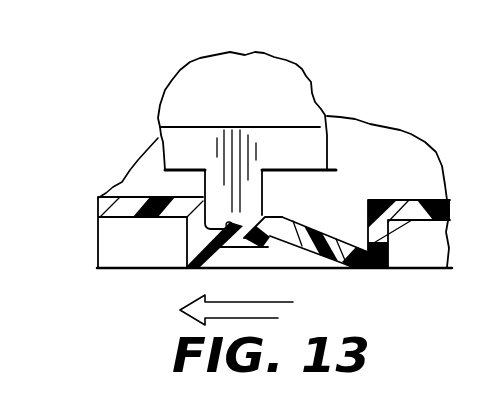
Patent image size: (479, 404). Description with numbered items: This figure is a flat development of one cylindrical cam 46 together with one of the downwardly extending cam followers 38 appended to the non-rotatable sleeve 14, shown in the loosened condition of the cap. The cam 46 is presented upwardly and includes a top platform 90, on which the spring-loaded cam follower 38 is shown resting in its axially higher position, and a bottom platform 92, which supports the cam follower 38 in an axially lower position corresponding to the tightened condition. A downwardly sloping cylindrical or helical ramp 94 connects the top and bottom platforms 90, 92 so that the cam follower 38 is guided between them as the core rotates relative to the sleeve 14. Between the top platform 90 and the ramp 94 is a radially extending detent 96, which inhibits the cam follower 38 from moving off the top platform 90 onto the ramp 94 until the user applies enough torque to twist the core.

The sleeve 14 is at (317, 82).
The cam follower 38 is at (225, 192).
The cylindrical cam 46 is at (317, 217).
The top platform 90 is at (236, 247).
The bottom platform 92 is at (352, 267).
The ramp 94 is at (333, 240).
The detent 96 is at (266, 221).